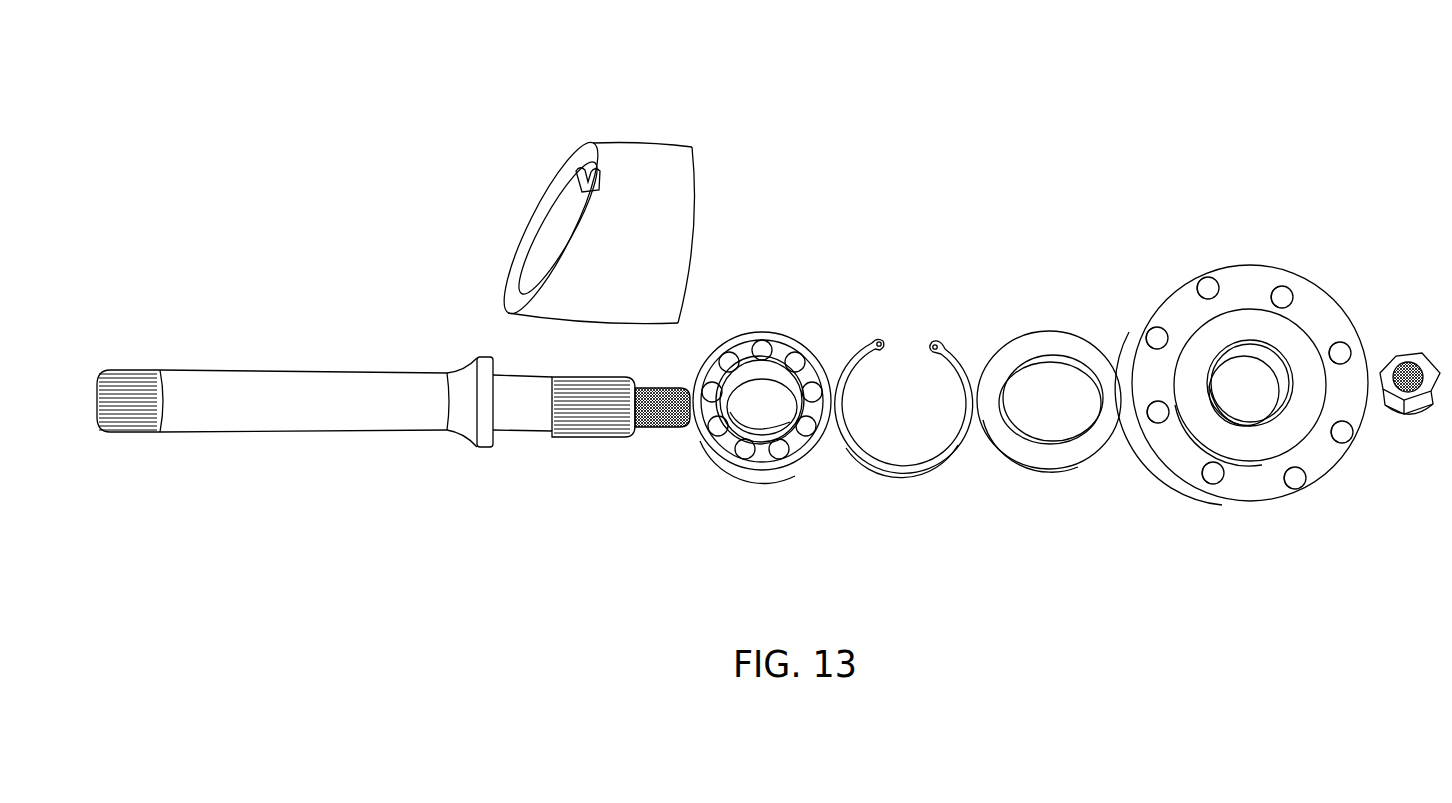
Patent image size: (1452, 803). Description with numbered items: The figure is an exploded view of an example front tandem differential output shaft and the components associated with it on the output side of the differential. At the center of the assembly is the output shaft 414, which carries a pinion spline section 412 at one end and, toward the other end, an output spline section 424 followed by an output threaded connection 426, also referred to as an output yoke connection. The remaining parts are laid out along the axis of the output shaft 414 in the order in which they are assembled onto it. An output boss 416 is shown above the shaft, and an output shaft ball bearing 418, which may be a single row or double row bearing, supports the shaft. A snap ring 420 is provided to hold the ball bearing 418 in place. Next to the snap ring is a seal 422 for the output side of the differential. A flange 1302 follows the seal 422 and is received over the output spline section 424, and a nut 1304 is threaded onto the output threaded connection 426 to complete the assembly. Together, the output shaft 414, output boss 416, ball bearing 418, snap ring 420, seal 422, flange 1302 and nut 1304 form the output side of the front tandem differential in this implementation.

The pinion spline section 412 is at (128, 372).
The output shaft 414 is at (310, 380).
The output boss 416 is at (640, 145).
The output shaft ball bearing 418 is at (763, 333).
The snap ring 420 is at (917, 468).
The seal 422 is at (1060, 458).
The output spline section 424 is at (560, 437).
The output threaded connection 426 is at (647, 427).
The flange 1302 is at (1213, 260).
The nut 1304 is at (1405, 353).